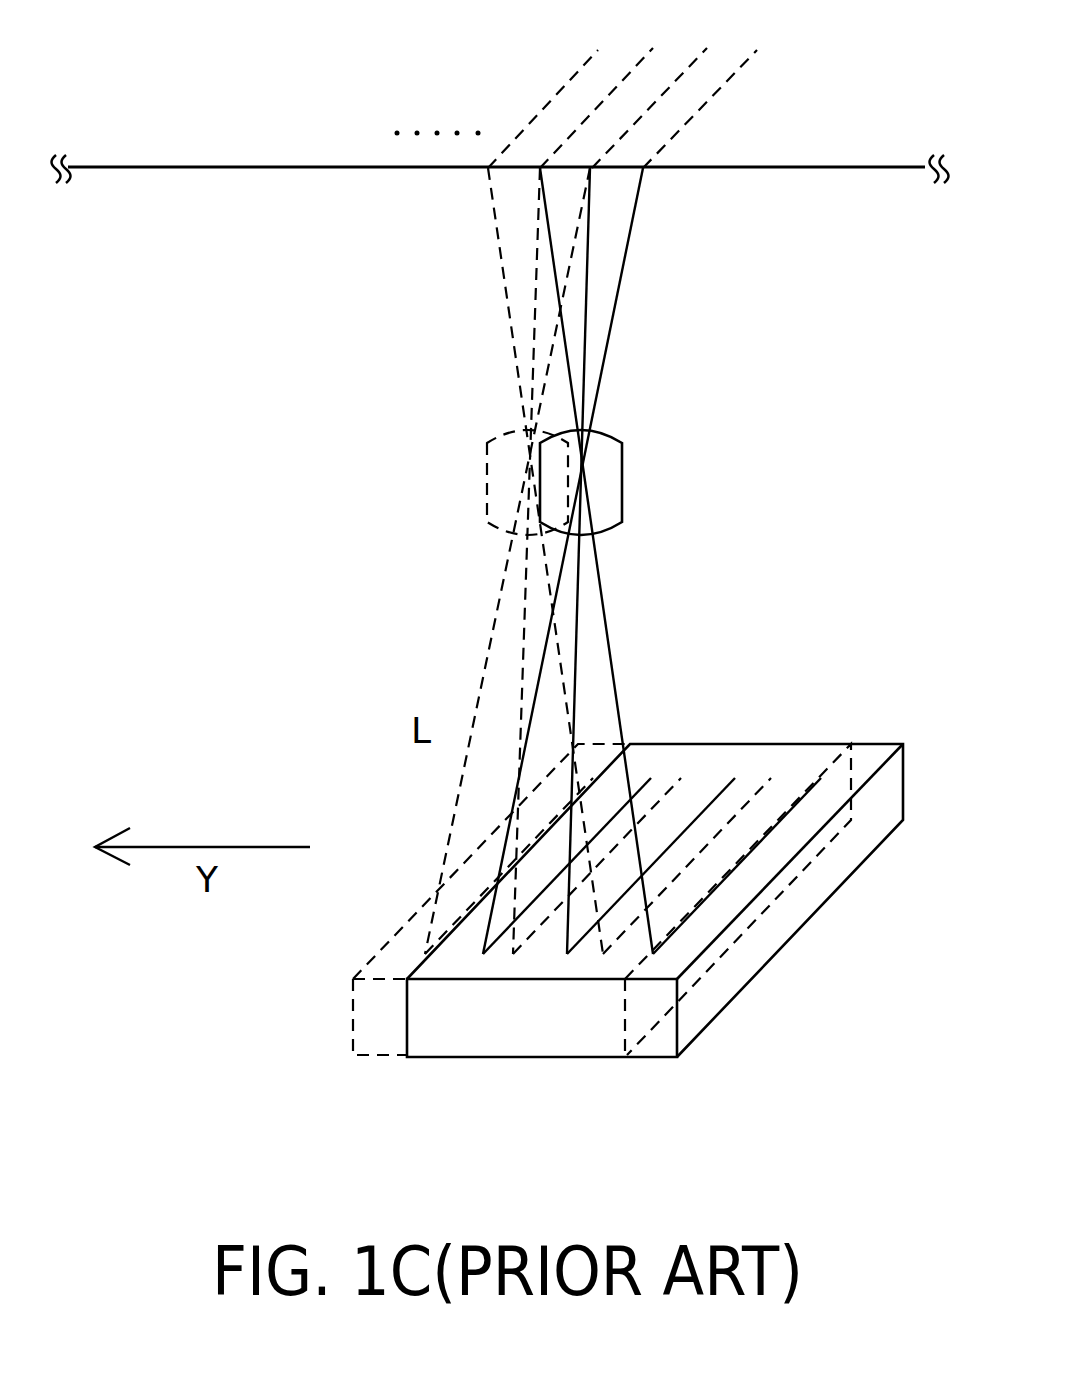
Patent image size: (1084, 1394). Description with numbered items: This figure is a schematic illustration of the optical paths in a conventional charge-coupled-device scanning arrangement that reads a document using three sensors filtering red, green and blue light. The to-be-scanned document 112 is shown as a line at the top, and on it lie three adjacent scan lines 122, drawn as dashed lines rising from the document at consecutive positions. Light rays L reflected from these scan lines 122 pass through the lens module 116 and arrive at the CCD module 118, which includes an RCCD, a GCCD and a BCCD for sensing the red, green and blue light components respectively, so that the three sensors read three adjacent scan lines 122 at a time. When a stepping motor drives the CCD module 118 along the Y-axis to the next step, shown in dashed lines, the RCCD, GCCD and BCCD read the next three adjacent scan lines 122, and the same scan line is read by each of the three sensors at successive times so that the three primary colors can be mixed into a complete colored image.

The to-be-scanned document 112 is at (220, 167).
The scan lines 122 is at (700, 107).
The lens module 116 is at (600, 490).
The CCD module 118 is at (798, 913).